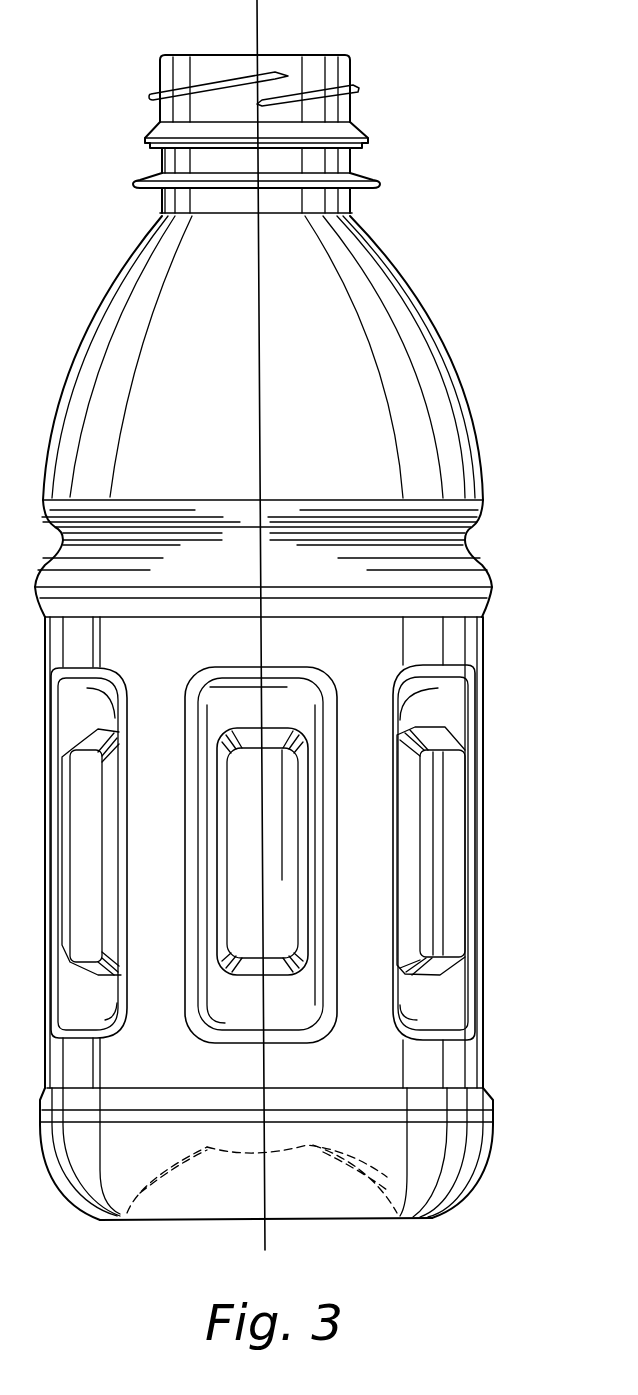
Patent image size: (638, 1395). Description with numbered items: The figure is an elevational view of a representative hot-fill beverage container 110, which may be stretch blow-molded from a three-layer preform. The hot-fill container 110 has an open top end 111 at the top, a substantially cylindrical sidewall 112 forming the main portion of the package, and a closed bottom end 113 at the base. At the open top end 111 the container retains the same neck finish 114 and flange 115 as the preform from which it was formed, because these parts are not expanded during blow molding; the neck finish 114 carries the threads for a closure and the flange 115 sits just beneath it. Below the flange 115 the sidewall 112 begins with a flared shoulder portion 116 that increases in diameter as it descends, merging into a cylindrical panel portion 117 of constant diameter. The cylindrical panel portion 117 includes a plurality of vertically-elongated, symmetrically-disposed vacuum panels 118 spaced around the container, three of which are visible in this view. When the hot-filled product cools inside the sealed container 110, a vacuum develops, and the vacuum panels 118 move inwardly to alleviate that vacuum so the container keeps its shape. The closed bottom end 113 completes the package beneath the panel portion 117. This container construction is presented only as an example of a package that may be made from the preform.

The hot-fill container 110 is at (489, 284).
The open top end 111 is at (325, 55).
The sidewall 112 is at (485, 748).
The closed bottom end 113 is at (380, 1218).
The neck finish 114 is at (358, 89).
The flange 115 is at (380, 183).
The flared shoulder portion 116 is at (472, 428).
The cylindrical panel portion 117 is at (483, 663).
The vacuum panels 118 is at (452, 1000).